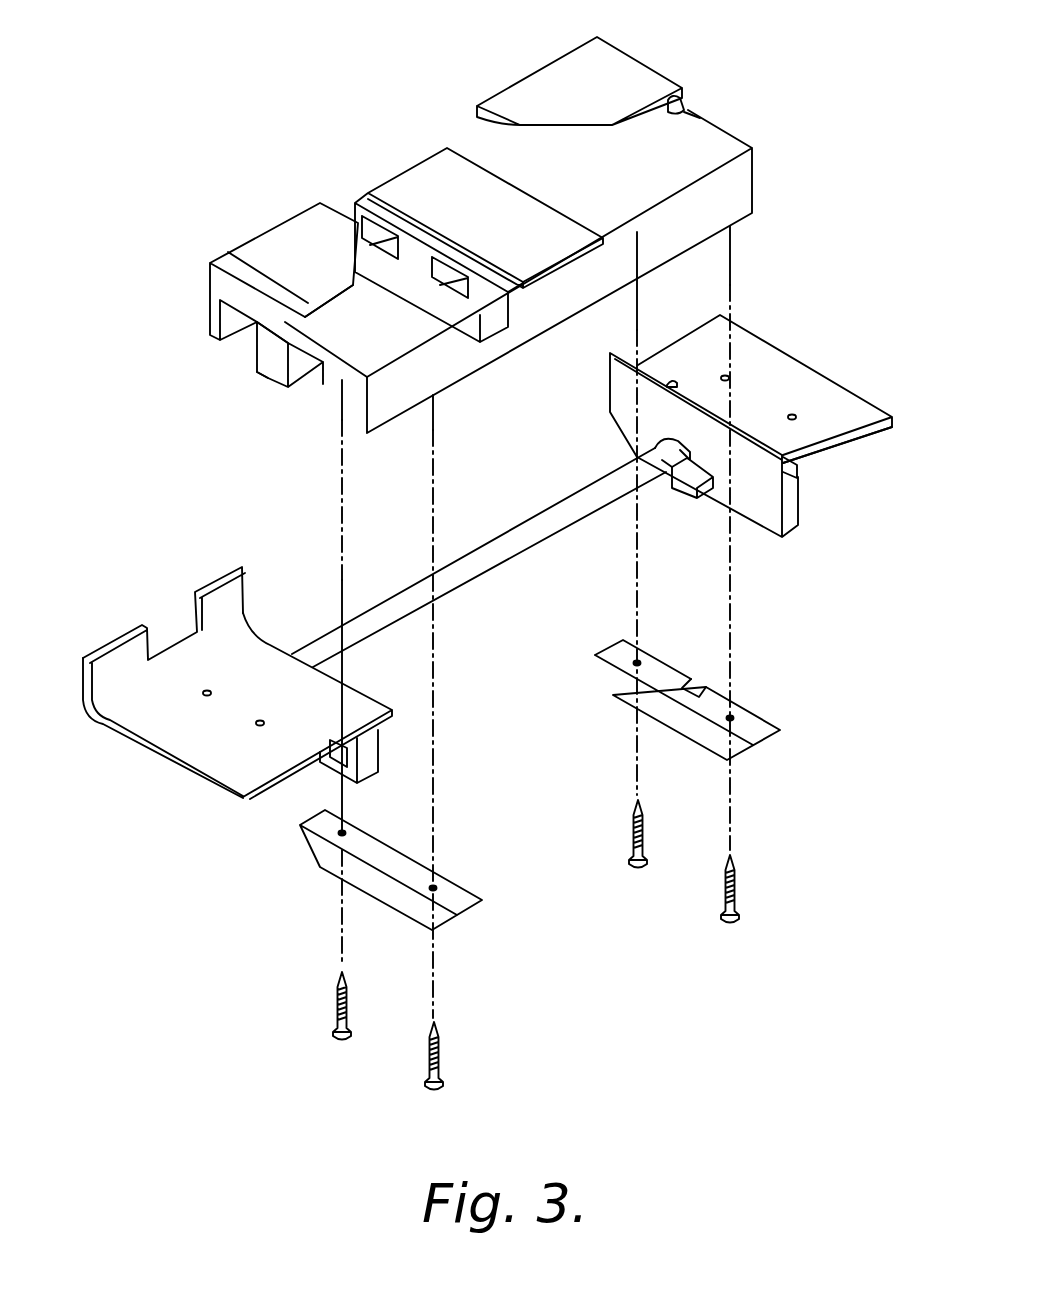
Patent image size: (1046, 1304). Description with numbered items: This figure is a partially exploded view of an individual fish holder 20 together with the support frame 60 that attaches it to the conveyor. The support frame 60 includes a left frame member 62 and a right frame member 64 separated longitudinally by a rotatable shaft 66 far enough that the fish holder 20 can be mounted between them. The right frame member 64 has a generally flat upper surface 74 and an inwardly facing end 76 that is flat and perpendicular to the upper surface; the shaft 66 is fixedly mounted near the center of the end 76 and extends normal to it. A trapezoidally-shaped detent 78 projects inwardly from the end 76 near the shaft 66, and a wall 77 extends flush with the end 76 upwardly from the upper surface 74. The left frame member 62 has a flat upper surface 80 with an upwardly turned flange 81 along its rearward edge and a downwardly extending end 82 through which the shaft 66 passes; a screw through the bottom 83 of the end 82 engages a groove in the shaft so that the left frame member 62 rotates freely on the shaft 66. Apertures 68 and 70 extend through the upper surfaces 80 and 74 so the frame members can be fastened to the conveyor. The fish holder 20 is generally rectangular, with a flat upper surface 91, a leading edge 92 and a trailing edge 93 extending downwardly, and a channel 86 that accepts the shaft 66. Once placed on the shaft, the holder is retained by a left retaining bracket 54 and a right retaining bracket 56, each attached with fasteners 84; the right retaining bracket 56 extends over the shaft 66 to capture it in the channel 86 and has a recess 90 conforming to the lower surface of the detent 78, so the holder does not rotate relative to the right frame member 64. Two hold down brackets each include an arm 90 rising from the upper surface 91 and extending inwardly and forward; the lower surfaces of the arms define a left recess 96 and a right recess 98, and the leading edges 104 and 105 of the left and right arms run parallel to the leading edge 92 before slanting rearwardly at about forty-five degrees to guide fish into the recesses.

The fish holder 20 is at (258, 226).
The left retaining bracket 54 is at (460, 905).
The right retaining bracket 56 is at (755, 737).
The support frame 60 is at (224, 697).
The left frame member 62 is at (190, 755).
The right frame member 64 is at (827, 393).
The rotatable shaft 66 is at (342, 632).
The apertures 68 is at (260, 723).
The apertures 70 is at (792, 415).
The upper surface 74 is at (820, 437).
The inwardly facing end 76 is at (760, 517).
The wall 77 is at (788, 472).
The detent 78 is at (685, 500).
The upper surface 80 is at (230, 775).
The flange 81 is at (113, 637).
The downwardly extending end 82 is at (365, 765).
The bottom 83 is at (337, 772).
The fasteners 84 is at (351, 1036).
The channel 86 is at (275, 377).
The arm 90 is at (552, 83).
The upper surface 91 is at (686, 163).
The leading edge 92 is at (737, 222).
The trailing edge 93 is at (400, 167).
The left recess 96 is at (287, 319).
The right recess 98 is at (684, 122).
The leading edge of the left arm 104 is at (325, 303).
The leading edge of the right arm 105 is at (685, 97).